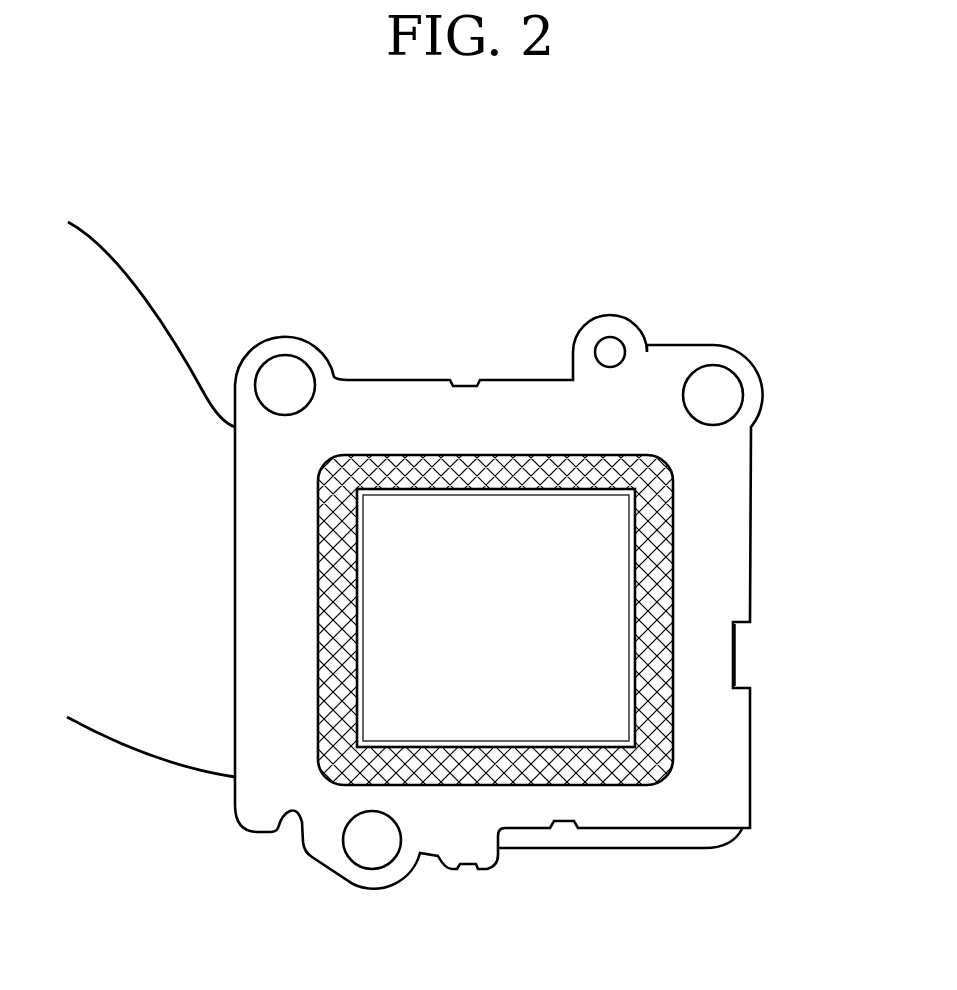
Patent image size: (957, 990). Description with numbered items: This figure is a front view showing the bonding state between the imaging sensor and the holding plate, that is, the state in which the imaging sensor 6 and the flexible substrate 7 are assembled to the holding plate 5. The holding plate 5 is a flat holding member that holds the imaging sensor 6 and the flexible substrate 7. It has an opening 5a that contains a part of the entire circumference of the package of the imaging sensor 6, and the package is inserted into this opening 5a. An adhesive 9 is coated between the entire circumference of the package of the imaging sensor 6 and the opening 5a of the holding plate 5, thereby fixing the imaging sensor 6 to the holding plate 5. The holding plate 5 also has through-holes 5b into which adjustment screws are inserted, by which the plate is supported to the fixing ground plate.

The holding plate 5 is at (735, 528).
The opening 5a is at (418, 455).
The through-holes 5b is at (287, 372).
The imaging sensor 6 is at (612, 593).
The flexible substrate 7 is at (130, 290).
The adhesive 9 is at (680, 708).